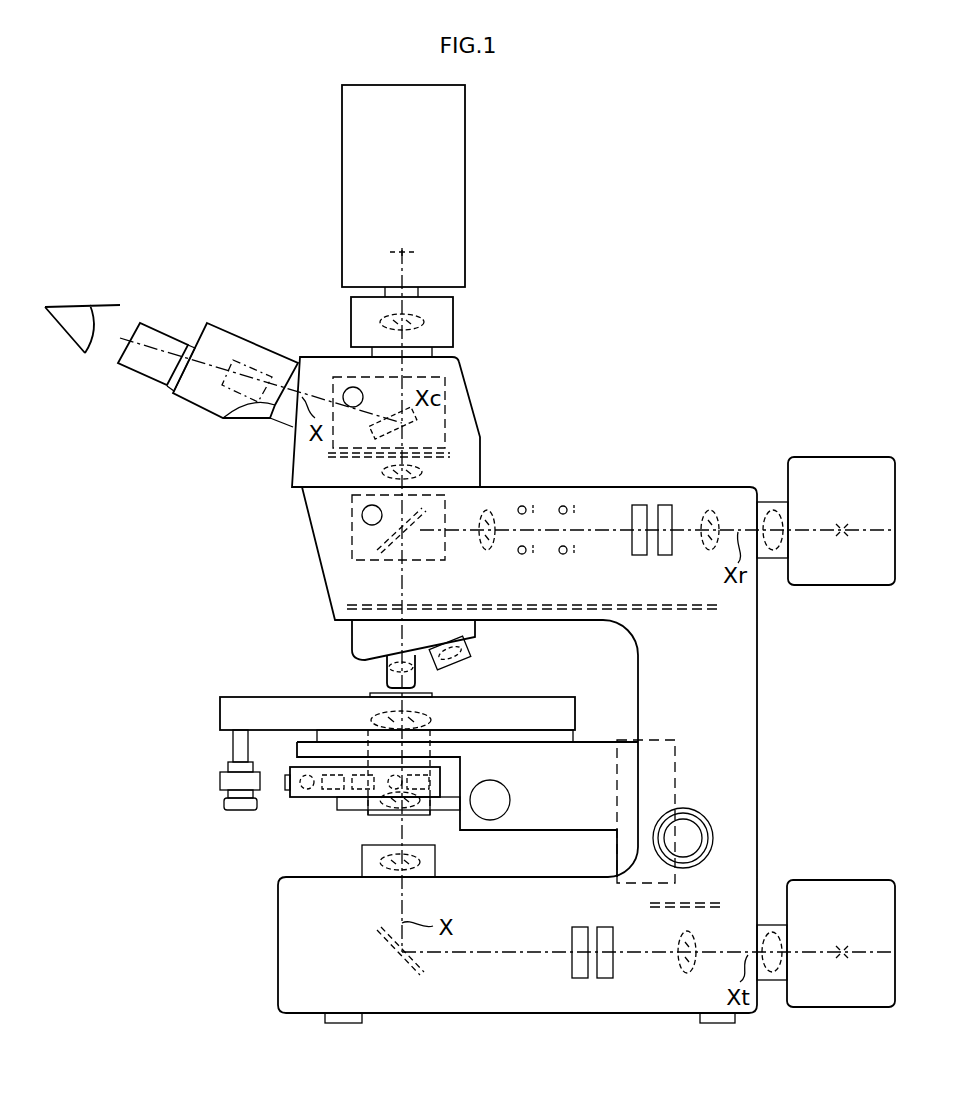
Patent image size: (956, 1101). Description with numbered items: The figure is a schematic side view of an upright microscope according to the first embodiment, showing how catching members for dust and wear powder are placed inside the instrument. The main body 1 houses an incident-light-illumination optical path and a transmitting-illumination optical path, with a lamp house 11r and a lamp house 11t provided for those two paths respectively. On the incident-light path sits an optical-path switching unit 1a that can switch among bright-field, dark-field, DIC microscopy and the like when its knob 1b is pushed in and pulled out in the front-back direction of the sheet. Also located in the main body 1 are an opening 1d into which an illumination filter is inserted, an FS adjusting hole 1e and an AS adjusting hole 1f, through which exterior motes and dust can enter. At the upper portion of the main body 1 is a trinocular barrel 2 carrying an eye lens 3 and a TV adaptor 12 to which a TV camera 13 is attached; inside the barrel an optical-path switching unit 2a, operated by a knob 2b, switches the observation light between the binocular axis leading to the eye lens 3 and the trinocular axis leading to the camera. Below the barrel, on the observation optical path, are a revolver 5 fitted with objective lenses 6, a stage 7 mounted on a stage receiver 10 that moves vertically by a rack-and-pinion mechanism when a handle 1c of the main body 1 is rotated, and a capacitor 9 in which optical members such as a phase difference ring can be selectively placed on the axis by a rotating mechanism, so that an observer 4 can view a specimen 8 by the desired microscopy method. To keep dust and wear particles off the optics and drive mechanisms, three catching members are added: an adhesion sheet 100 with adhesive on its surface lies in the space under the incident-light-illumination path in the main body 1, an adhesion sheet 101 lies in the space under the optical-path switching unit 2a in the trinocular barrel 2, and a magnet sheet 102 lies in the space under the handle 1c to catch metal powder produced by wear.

The main body 1 is at (728, 485).
The optical-path switching unit 1a is at (352, 545).
The knob 1b is at (362, 515).
The handle 1c is at (713, 825).
The opening 1d is at (640, 505).
The FS adjusting hole 1e is at (522, 505).
The AS adjusting hole 1f is at (563, 505).
The trinocular barrel 2 is at (480, 420).
The optical-path switching unit 2a is at (447, 392).
The knob 2b is at (346, 389).
The eye lens 3 is at (133, 372).
The observer 4 is at (73, 303).
The revolver 5 is at (368, 637).
The objective lenses 6 is at (385, 670).
The stage 7 is at (218, 713).
The specimen 8 is at (432, 694).
The capacitor 9 is at (310, 797).
The stage receiver 10 is at (537, 818).
The lamp house 11r is at (843, 585).
The lamp house 11t is at (845, 1007).
The TV adaptor 12 is at (453, 318).
The TV camera 13 is at (465, 237).
The adhesion sheet 100 is at (700, 612).
The adhesion sheet 101 is at (328, 455).
The magnet sheet 102 is at (707, 903).